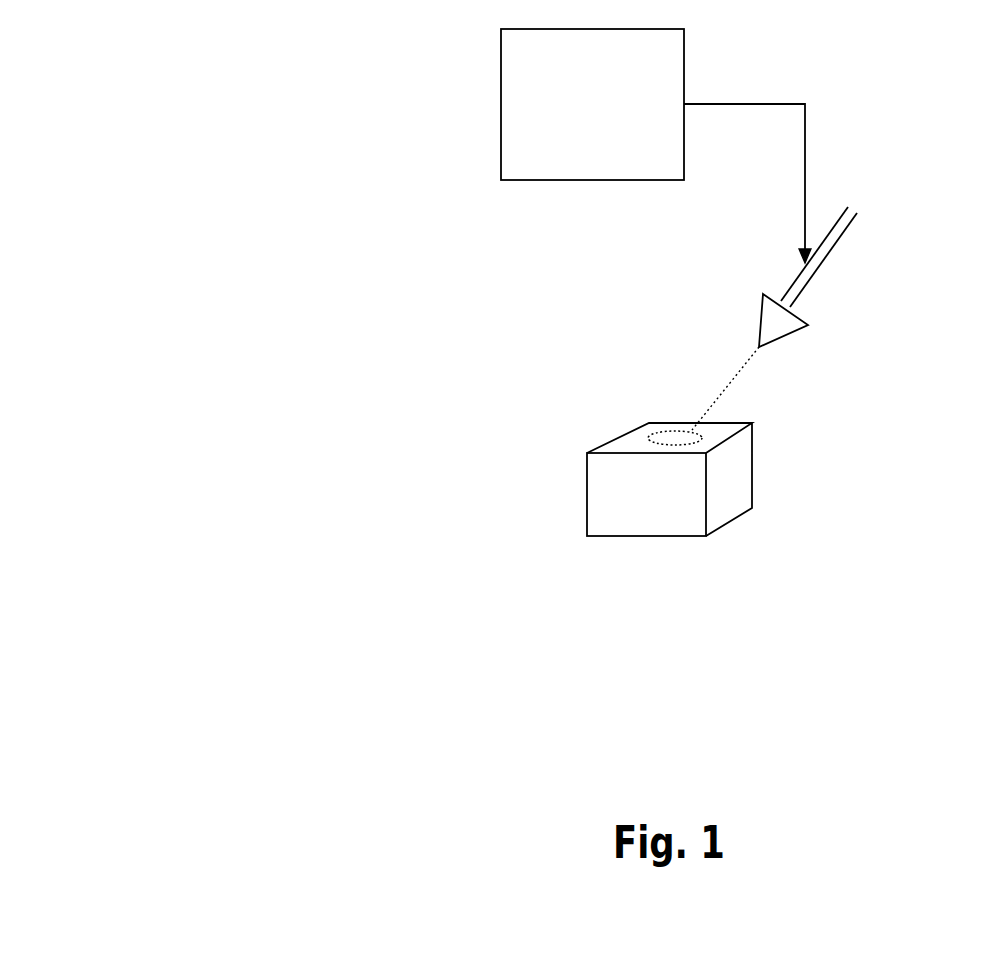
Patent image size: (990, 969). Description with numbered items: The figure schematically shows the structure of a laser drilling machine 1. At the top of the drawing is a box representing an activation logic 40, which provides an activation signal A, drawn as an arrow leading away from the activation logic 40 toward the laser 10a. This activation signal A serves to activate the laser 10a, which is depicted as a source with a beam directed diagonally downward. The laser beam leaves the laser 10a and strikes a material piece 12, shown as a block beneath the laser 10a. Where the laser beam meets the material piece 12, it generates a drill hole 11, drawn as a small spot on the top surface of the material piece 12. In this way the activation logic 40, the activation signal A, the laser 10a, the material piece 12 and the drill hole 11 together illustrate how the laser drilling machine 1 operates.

The laser drilling machine 1 is at (205, 78).
The activation logic 40 is at (487, 37).
The activation signal A is at (815, 110).
The laser 10a is at (868, 258).
The drill hole 11 is at (648, 440).
The material piece 12 is at (737, 477).